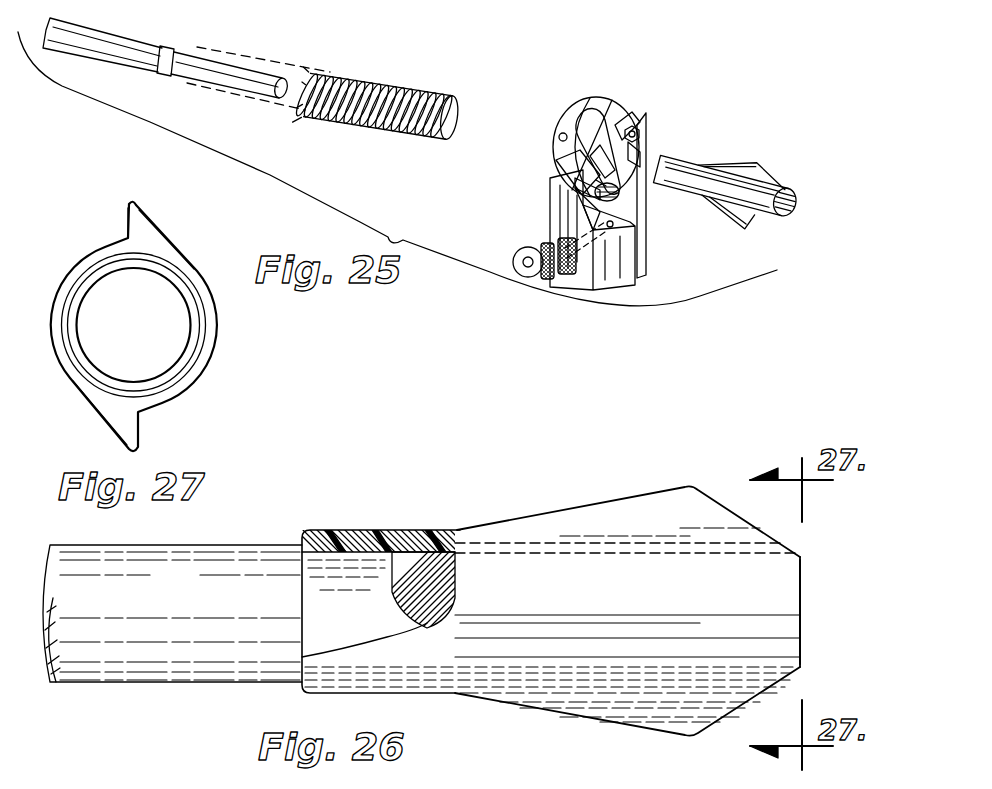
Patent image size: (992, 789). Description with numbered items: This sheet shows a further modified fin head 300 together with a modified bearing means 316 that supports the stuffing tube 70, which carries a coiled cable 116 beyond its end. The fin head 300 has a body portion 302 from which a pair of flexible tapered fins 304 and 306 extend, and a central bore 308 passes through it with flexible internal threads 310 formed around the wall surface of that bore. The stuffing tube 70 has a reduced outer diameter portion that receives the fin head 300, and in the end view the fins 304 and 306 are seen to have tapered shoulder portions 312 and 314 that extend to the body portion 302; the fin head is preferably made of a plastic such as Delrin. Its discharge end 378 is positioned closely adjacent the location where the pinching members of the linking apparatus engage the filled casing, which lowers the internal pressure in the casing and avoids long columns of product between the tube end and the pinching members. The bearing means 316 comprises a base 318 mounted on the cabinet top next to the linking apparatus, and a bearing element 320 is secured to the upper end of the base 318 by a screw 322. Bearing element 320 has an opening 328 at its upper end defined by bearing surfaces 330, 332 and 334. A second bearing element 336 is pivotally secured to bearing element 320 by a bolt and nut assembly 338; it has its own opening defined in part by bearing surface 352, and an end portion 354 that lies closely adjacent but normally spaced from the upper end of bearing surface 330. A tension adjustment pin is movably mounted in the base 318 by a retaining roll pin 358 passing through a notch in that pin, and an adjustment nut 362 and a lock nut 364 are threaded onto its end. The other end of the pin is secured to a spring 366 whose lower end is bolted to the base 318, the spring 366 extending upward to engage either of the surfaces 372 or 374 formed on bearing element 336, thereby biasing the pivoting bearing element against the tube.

In FIG. 25, the stuffing tube 70 is at (116, 60).
In FIG. 26, the stuffing tube 70 is at (110, 558).
In FIG. 25, the coiled cable 116 is at (364, 92).
In FIG. 25, the fin head 300 is at (761, 194).
In FIG. 27, the fin head 300 is at (167, 312).
In FIG. 26, the fin head 300 is at (583, 593).
In FIG. 25, the body portion 302 is at (782, 186).
In FIG. 27, the body portion 302 is at (217, 339).
In FIG. 26, the body portion 302 is at (640, 610).
In FIG. 25, the fin 304 is at (760, 163).
In FIG. 27, the fin 304 is at (136, 206).
In FIG. 26, the fin 304 is at (690, 487).
In FIG. 25, the fin 306 is at (743, 226).
In FIG. 27, the fin 306 is at (141, 449).
In FIG. 26, the fin 306 is at (683, 737).
In FIG. 27, the central bore 308 is at (110, 357).
In FIG. 25, the flexible internal threads 310 is at (796, 206).
In FIG. 27, the flexible internal threads 310 is at (188, 369).
In FIG. 26, the flexible internal threads 310 is at (423, 546).
In FIG. 27, the tapered shoulder portion 312 is at (150, 231).
In FIG. 27, the tapered shoulder portion 314 is at (108, 413).
In FIG. 26, the tapered shoulder portion 314 is at (633, 717).
In FIG. 25, the bearing means 316 is at (599, 194).
In FIG. 25, the base 318 is at (607, 281).
In FIG. 25, the bearing element 320 is at (561, 197).
In FIG. 25, the screw 322 is at (597, 183).
In FIG. 25, the opening 328 is at (600, 153).
In FIG. 25, the bearing surface 330 is at (560, 170).
In FIG. 25, the bearing surface 332 is at (634, 154).
In FIG. 25, the bearing surface 334 is at (598, 145).
In FIG. 25, the bearing element 336 is at (584, 86).
In FIG. 25, the bolt and nut assembly 338 is at (639, 133).
In FIG. 25, the bearing surface 352 is at (592, 163).
In FIG. 25, the end portion 354 is at (562, 134).
In FIG. 25, the retaining roll pin 358 is at (613, 226).
In FIG. 25, the adjustment nut 362 is at (560, 280).
In FIG. 25, the lock nut 364 is at (531, 271).
In FIG. 25, the spring 366 is at (647, 268).
In FIG. 25, the surface 372 is at (578, 186).
In FIG. 25, the surface 374 is at (640, 135).
In FIG. 26, the discharge end 378 is at (800, 600).